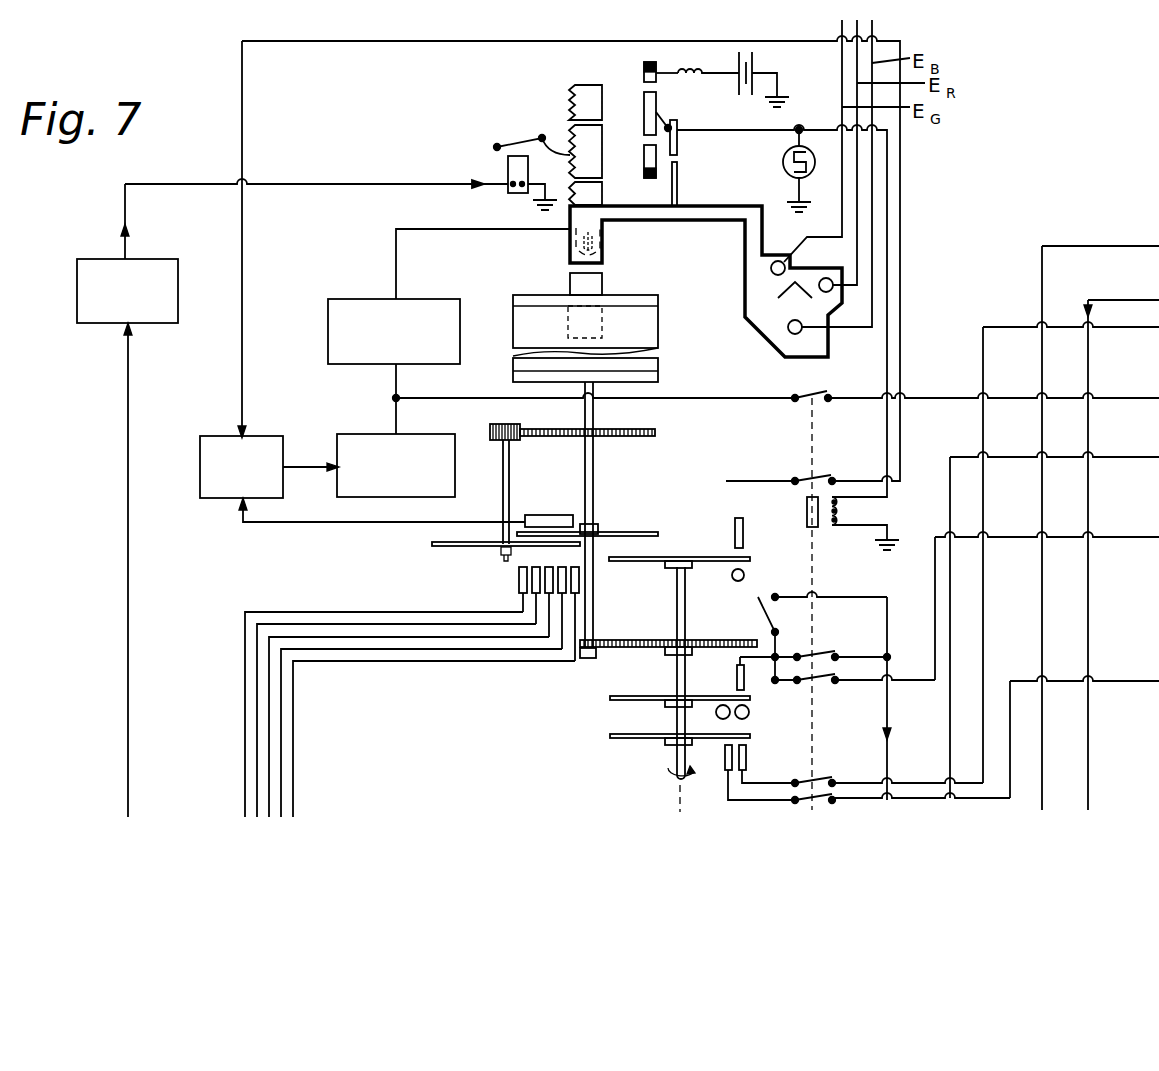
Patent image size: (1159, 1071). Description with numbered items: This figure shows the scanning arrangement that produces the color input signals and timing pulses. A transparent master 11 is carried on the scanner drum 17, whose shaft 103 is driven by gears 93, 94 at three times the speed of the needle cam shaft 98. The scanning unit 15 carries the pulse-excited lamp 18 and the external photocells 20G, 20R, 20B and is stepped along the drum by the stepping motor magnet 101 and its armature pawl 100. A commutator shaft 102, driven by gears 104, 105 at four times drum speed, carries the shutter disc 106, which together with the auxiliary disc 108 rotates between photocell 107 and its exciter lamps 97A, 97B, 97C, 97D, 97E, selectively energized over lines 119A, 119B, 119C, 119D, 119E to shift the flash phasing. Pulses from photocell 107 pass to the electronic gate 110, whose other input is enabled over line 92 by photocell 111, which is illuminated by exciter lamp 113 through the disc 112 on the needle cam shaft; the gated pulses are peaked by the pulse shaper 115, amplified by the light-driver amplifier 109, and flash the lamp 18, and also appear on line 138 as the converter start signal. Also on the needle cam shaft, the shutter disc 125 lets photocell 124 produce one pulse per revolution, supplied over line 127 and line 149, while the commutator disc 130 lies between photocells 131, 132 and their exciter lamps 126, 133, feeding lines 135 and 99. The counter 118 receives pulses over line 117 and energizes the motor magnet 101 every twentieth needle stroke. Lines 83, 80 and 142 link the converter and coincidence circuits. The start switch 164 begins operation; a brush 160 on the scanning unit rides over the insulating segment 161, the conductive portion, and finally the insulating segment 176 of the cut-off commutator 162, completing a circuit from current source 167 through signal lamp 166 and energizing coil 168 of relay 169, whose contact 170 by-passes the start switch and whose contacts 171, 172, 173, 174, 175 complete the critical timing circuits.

The counter 118 is at (148, 258).
The line 117 is at (128, 495).
The electronic gate 110 is at (257, 437).
The pulse shaper 115 is at (412, 437).
The light-driver amplifier 109 is at (437, 299).
The armature pawl 100 is at (521, 140).
The magnet 101 is at (508, 170).
The insulating segment 161 is at (643, 67).
The cut-off commutator 162 is at (637, 145).
The insulating segment 176 is at (630, 172).
The brush 160 is at (668, 124).
The current source 167 is at (755, 62).
The signal lamp 166 is at (783, 162).
The line 92 is at (900, 228).
The scanning unit 15 is at (745, 296).
The lamp 18 is at (600, 242).
The photocell 20G is at (780, 261).
The photocell 20R is at (829, 278).
The photocell 20B is at (790, 331).
The scanner drum 17 is at (528, 300).
The transparent master 11 is at (658, 330).
The relay contact 171 is at (802, 395).
The line 138 is at (1128, 400).
The line 83 is at (1042, 291).
The line 80 is at (1115, 298).
The line 135 is at (1130, 328).
The line 142 is at (1127, 460).
The line 149 is at (1133, 540).
The line 99 is at (1115, 680).
The line 127 is at (895, 805).
The relay contact 172 is at (815, 478).
The relay 169 is at (782, 492).
The coil 168 is at (836, 520).
The start switch 164 is at (758, 600).
The relay contact 170 is at (832, 648).
The relay contact 173 is at (820, 682).
The relay contact 174 is at (822, 783).
The relay contact 175 is at (822, 802).
The shaft 103 is at (596, 510).
The gear 104 is at (574, 429).
The gear 105 is at (520, 440).
The commutator shaft 102 is at (503, 507).
The photocell 107 is at (550, 515).
The auxiliary disc 108 is at (628, 532).
The shutter disc 106 is at (452, 548).
The exciter lamp 97A is at (519, 580).
The exciter lamp 97B is at (535, 565).
The exciter lamp 97C is at (550, 590).
The exciter lamp 97D is at (562, 583).
The exciter lamp 97E is at (579, 573).
The gear 93 is at (652, 648).
The gear 94 is at (584, 658).
The needle cam shaft 98 is at (676, 760).
The disc 112 is at (748, 560).
The shutter disc 125 is at (623, 697).
The exciter lamp 133 is at (727, 720).
The exciter lamp 126 is at (750, 711).
The commutator disc 130 is at (752, 740).
The photocell 131 is at (748, 765).
The photocell 132 is at (725, 748).
The photocell 124 is at (737, 672).
The photocell 111 is at (735, 535).
The exciter lamp 113 is at (745, 575).
The line 119A is at (245, 692).
The line 119B is at (257, 707).
The line 119C is at (269, 724).
The line 119D is at (281, 742).
The line 119E is at (293, 765).